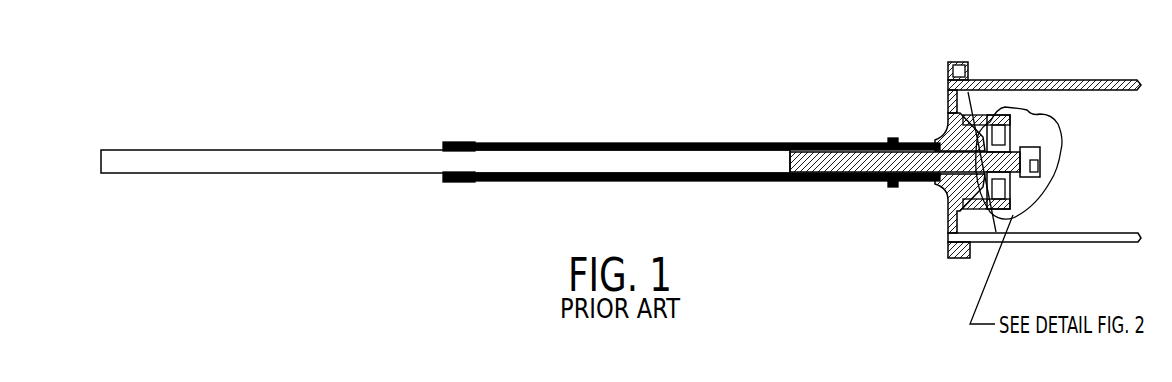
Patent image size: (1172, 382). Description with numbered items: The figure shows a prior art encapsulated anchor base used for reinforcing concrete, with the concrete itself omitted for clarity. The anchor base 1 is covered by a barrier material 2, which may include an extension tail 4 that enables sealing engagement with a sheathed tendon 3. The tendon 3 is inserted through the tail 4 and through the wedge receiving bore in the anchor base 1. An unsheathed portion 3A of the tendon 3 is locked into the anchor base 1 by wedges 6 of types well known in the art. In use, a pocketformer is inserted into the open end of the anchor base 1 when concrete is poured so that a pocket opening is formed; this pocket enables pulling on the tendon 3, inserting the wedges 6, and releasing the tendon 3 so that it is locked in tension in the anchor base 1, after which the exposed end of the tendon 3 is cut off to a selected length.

The anchor base 1 is at (940, 136).
The barrier material 2 is at (947, 75).
The sheathed tendon 3 is at (335, 157).
The unsheathed portion of the tendon 3A is at (825, 160).
The extension tail 4 is at (894, 188).
The wedges 6 is at (952, 192).